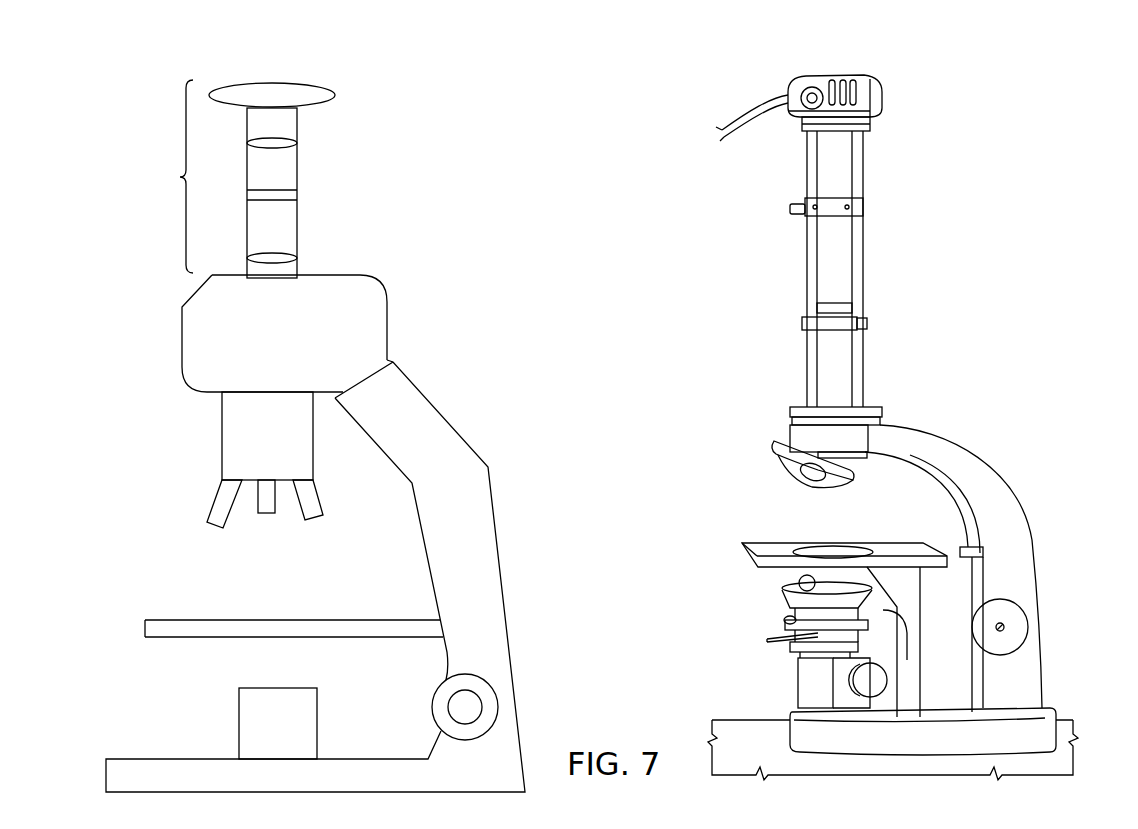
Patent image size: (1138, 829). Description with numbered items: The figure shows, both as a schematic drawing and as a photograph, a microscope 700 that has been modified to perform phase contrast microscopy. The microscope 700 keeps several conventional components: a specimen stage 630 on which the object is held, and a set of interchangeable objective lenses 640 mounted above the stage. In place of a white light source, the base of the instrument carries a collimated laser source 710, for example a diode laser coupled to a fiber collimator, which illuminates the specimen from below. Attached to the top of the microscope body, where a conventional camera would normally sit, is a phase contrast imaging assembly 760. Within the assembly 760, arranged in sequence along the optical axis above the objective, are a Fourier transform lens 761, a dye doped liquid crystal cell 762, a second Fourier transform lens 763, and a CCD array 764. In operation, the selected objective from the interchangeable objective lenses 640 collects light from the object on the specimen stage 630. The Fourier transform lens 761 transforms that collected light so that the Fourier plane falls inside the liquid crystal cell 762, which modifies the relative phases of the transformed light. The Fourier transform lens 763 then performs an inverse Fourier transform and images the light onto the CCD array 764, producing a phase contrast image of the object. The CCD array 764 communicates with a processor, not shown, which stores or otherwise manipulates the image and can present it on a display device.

The microscope 700 is at (96, 96).
The phase contrast imaging assembly 760 is at (219, 179).
The Fourier transform lens 761 is at (298, 258).
The dye doped liquid crystal cell 762 is at (298, 196).
The Fourier transform lens 763 is at (298, 145).
The CCD array 764 is at (337, 98).
The interchangeable objective lenses 640 is at (212, 505).
The specimen stage 630 is at (145, 629).
The collimated laser source 710 is at (239, 728).